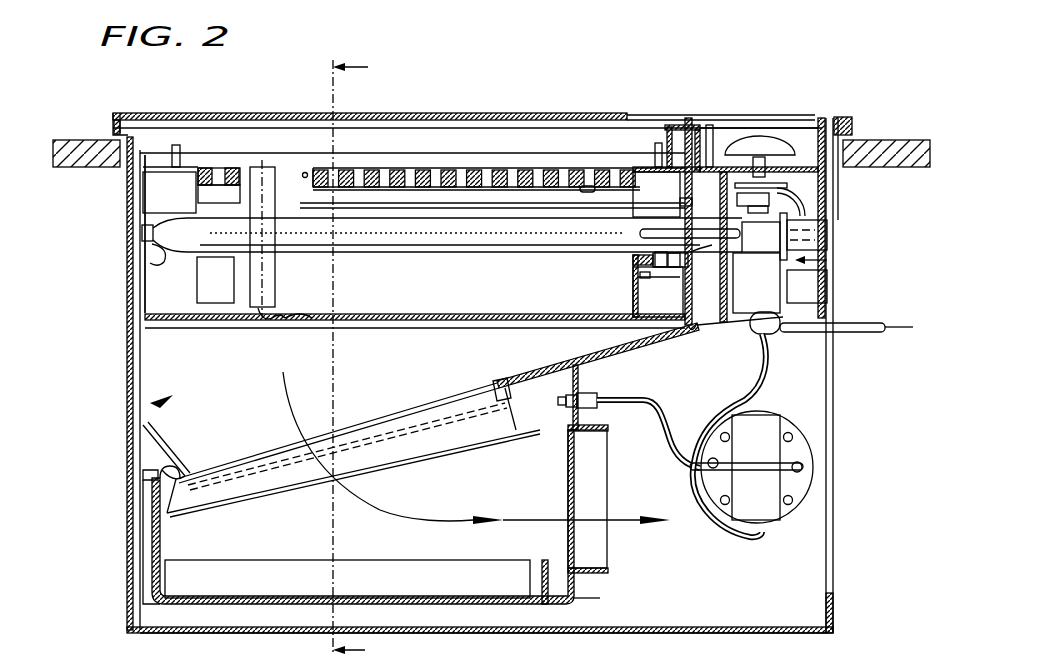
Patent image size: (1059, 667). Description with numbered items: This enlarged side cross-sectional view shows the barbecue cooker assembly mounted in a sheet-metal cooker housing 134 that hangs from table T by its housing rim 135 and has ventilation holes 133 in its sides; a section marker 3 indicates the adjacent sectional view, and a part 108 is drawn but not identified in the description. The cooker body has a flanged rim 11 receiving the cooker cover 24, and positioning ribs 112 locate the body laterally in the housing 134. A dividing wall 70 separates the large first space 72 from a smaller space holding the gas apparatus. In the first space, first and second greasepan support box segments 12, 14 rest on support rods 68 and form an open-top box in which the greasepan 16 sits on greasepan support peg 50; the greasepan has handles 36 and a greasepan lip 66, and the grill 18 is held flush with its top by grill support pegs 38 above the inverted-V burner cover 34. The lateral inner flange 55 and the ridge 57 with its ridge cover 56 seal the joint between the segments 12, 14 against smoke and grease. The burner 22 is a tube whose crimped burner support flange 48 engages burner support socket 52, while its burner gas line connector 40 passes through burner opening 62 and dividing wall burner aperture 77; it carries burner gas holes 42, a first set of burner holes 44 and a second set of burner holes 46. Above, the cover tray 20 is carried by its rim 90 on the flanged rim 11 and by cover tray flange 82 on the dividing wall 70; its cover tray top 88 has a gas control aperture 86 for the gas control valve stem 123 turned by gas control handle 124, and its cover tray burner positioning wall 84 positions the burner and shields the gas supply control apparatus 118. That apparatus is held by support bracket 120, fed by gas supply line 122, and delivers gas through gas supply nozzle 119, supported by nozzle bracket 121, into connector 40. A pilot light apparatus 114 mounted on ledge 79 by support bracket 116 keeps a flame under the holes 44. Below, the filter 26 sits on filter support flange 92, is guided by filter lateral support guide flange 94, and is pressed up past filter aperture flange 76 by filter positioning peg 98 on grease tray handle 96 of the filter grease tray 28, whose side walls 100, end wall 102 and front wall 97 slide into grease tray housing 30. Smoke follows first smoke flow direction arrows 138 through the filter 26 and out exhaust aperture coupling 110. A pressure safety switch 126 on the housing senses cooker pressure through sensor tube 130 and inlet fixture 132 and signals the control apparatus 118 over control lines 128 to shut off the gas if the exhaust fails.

The flanged rim 11 is at (838, 118).
The first greasepan support box segment 12 is at (494, 153).
The second greasepan support box segment 14 is at (157, 283).
The greasepan 16 is at (200, 303).
The grill 18 is at (414, 168).
The cover tray 20 is at (826, 110).
The burner 22 is at (405, 240).
The cooker cover 24 is at (272, 113).
The filter 26 is at (455, 440).
The filter grease tray 28 is at (505, 606).
The grease tray housing 30 is at (576, 595).
The section line 3 is at (362, 355).
The burner cover 34 is at (355, 203).
The handles 36 is at (178, 145).
The grill support pegs 38 is at (235, 167).
The burner gas line connector 40 is at (785, 230).
The burner gas holes 42 is at (472, 235).
The first set of burner holes 44 is at (620, 245).
The second set of burner holes 46 is at (345, 255).
The burner support flange 48 is at (140, 224).
The greasepan support pegs 50 is at (305, 172).
The burner support socket 52 is at (160, 257).
The lateral inner flanges 55 is at (262, 307).
The ridge cover 56 is at (306, 320).
The ridge 57 is at (270, 322).
The burner opening 62 is at (666, 192).
The greasepan lip 66 is at (483, 650).
The support rods 68 is at (465, 327).
The dividing wall 70 is at (693, 337).
The first space 72 is at (150, 401).
The filter aperture flange 76 is at (510, 352).
The dividing wall burner aperture 77 is at (690, 203).
The ledge 79 is at (660, 285).
The cover tray flange 82 is at (688, 118).
The cover tray burner positioning wall 84 is at (727, 305).
The gas control aperture 86 is at (770, 134).
The cover tray top 88 is at (714, 125).
The rim 90 is at (846, 118).
The filter support flange 92 is at (226, 492).
The filter lateral support guide flange 94 is at (267, 477).
The grease tray handle 96 is at (143, 482).
The front wall 97 is at (160, 582).
The filter positioning peg 98 is at (172, 492).
The side walls 100 is at (393, 580).
The end wall 102 is at (530, 560).
The divider 108 is at (660, 125).
The exhaust aperture coupling 110 is at (605, 570).
The positioning ribs 112 is at (127, 143).
The pilot light apparatus 114 is at (633, 260).
The pilot light apparatus support bracket 116 is at (650, 277).
The gas supply control apparatus 118 is at (827, 260).
The gas supply nozzle 119 is at (823, 247).
The gas supply control apparatus support bracket 120 is at (813, 295).
The nozzle bracket 121 is at (827, 210).
The gas supply line 122 is at (852, 333).
The gas control valve stem 123 is at (798, 187).
The gas control handle 124 is at (754, 136).
The pressure safety switch 126 is at (812, 455).
The pressure safety switch control lines 128 is at (752, 537).
The cooker pressure sensor tube 130 is at (655, 440).
The cooker pressure sensor tube inlet fixture 132 is at (567, 408).
The ventilation holes 133 is at (128, 197).
The cooker housing 134 is at (830, 527).
The housing rim 135 is at (120, 133).
The first smoke flow direction arrows 138 is at (283, 400).